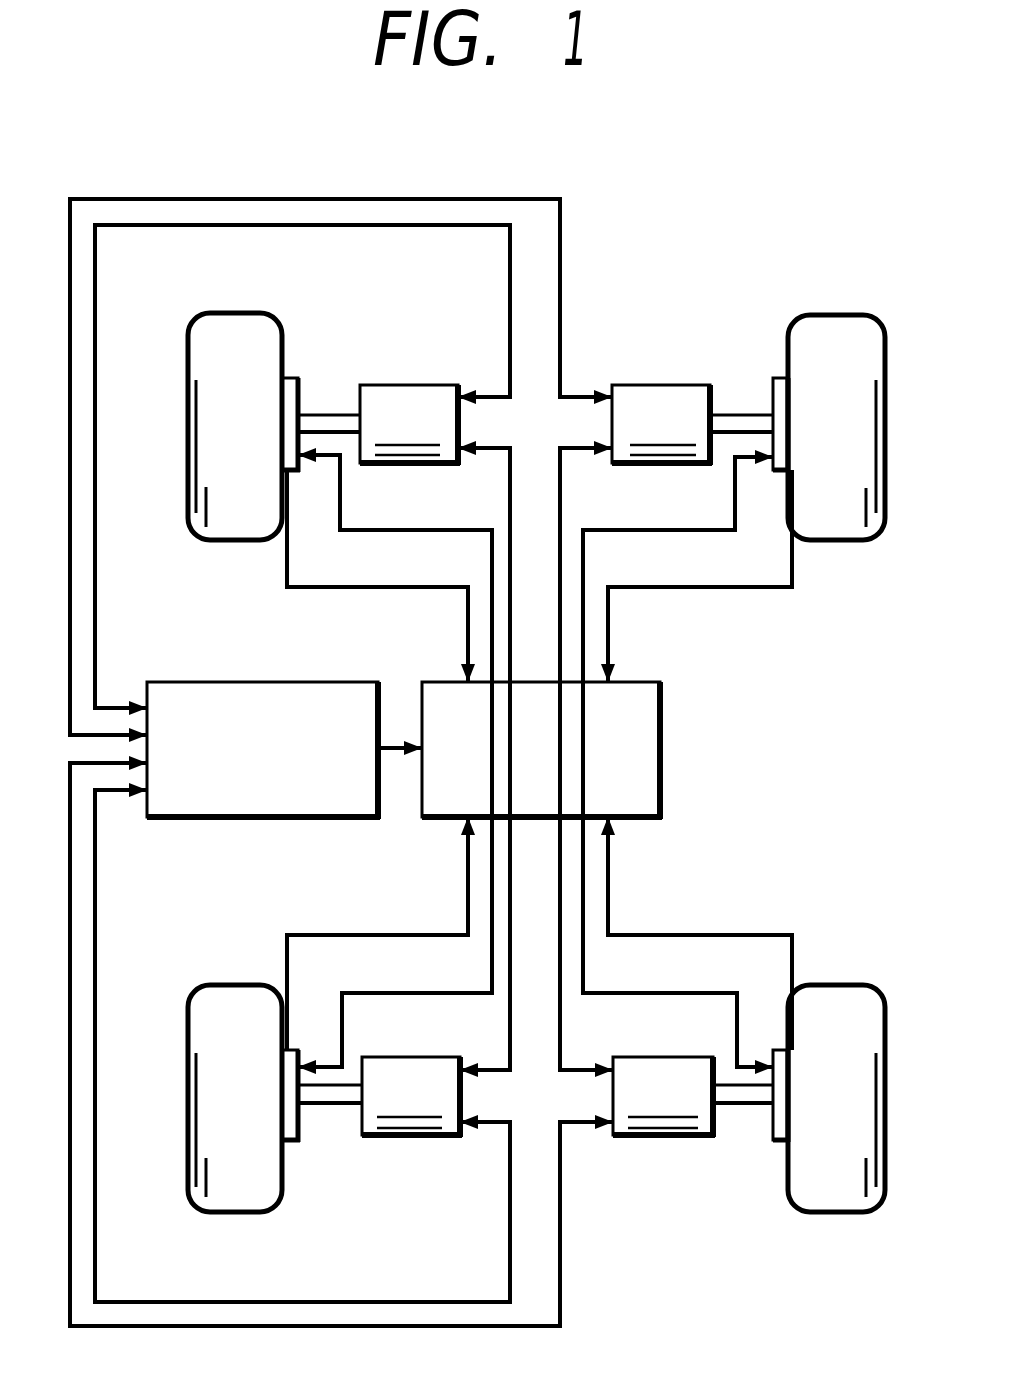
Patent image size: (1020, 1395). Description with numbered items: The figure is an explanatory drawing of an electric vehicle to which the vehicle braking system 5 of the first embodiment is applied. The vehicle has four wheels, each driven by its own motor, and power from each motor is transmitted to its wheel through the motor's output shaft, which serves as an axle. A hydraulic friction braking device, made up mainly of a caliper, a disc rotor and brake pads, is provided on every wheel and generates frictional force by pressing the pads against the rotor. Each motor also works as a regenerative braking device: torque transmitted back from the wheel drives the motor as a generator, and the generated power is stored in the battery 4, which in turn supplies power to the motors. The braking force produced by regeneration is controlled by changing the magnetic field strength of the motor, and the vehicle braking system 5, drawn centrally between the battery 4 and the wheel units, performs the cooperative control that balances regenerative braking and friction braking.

The battery 4 is at (290, 682).
The vehicle braking system 5 is at (630, 682).